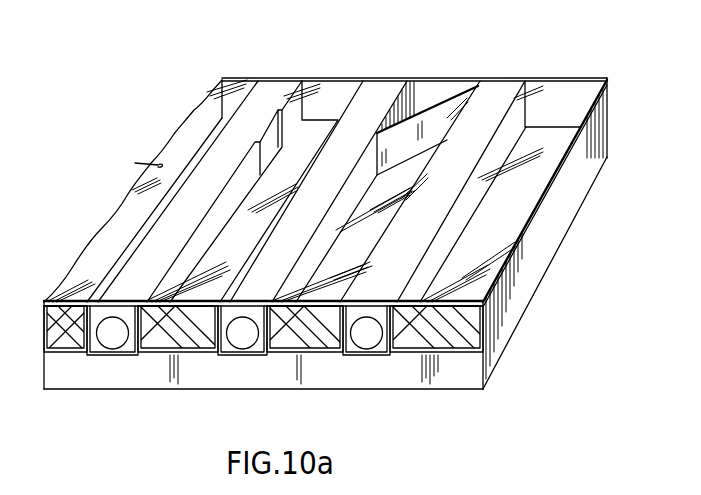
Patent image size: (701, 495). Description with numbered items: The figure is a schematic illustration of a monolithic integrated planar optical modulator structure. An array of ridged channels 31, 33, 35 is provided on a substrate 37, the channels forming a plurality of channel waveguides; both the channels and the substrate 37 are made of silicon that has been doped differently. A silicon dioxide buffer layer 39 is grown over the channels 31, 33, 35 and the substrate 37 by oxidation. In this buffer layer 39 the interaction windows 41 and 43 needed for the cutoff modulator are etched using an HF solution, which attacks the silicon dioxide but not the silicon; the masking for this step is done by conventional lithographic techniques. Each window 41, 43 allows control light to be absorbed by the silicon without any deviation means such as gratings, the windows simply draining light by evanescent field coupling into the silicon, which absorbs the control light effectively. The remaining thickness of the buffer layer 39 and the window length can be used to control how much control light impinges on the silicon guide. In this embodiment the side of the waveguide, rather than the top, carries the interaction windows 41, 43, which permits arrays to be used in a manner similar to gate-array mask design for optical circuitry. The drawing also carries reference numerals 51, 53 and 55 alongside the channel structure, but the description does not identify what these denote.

The ridged channel 31 is at (112, 342).
The ridged channel 33 is at (243, 345).
The ridged channel 35 is at (365, 345).
The substrate 37 is at (465, 377).
The SiO2 buffer layer 39 is at (157, 348).
The interaction window 41 is at (275, 132).
The interaction window 43 is at (252, 258).
The insulation block 51 is at (198, 335).
The channel member 53 is at (300, 340).
The channel member 55 is at (412, 342).